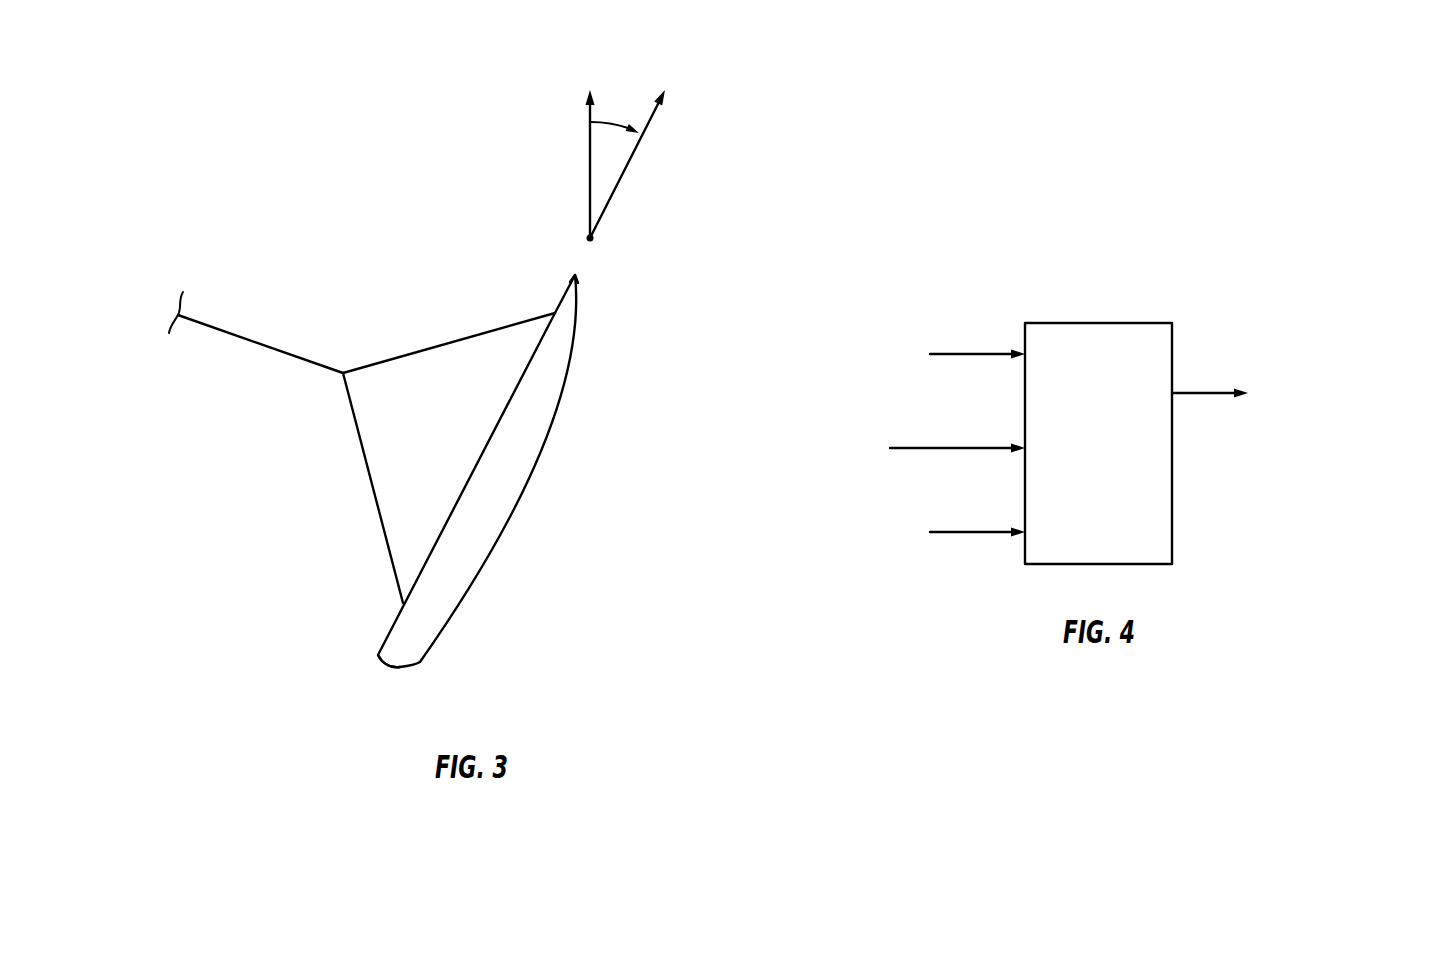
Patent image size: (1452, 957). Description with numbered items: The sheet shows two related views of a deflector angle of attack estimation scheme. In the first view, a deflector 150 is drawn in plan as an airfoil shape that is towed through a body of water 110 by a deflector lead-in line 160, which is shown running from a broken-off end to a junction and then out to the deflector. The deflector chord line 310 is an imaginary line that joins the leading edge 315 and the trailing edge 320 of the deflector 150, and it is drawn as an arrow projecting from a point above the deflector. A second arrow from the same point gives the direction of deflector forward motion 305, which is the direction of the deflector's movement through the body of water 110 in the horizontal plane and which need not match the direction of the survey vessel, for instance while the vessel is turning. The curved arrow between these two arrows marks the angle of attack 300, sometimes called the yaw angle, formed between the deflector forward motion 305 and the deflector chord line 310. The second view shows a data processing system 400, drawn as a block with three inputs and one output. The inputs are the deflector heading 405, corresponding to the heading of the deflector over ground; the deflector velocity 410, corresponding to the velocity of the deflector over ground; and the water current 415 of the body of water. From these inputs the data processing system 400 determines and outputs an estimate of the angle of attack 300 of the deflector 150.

In FIG. 3, the body of water 110 is at (361, 215).
In FIG. 3, the deflector 150 is at (533, 460).
In FIG. 3, the deflector lead-in line 160 is at (275, 345).
In FIG. 3, the angle of attack 300 is at (613, 121).
In FIG. 4, the angle of attack 300 is at (1200, 393).
In FIG. 3, the deflector forward motion 305 is at (590, 163).
In FIG. 3, the deflector chord line 310 is at (637, 150).
In FIG. 3, the leading edge 315 is at (378, 655).
In FIG. 3, the trailing edge 320 is at (575, 273).
In FIG. 4, the data processing system 400 is at (1100, 323).
In FIG. 4, the deflector heading 405 is at (986, 353).
In FIG. 4, the deflector velocity 410 is at (986, 447).
In FIG. 4, the water current 415 is at (986, 531).